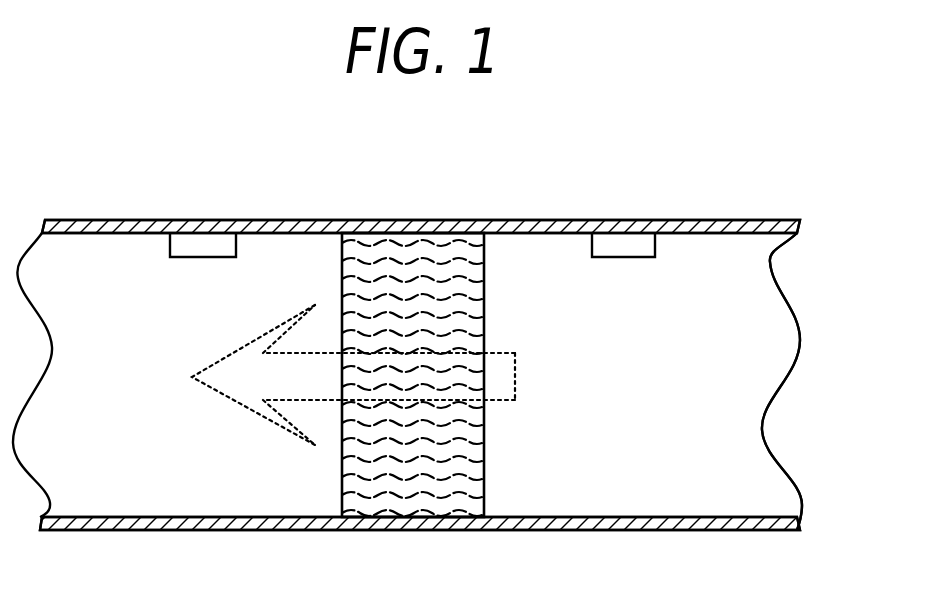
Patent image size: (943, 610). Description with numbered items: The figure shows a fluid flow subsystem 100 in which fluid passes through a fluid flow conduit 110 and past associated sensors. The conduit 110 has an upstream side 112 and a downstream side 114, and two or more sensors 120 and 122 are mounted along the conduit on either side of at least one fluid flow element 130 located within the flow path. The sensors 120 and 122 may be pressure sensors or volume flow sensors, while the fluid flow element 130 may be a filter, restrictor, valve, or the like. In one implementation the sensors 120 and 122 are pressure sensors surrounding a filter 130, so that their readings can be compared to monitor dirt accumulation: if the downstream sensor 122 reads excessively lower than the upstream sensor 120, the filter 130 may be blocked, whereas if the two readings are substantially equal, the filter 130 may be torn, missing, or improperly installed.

The fluid flow subsystem 100 is at (207, 168).
The fluid flow conduit 110 is at (765, 333).
The upstream side 112 is at (537, 531).
The downstream side 114 is at (533, 220).
The sensor 120 is at (622, 258).
The sensor 122 is at (204, 258).
The fluid flow element 130 is at (486, 458).